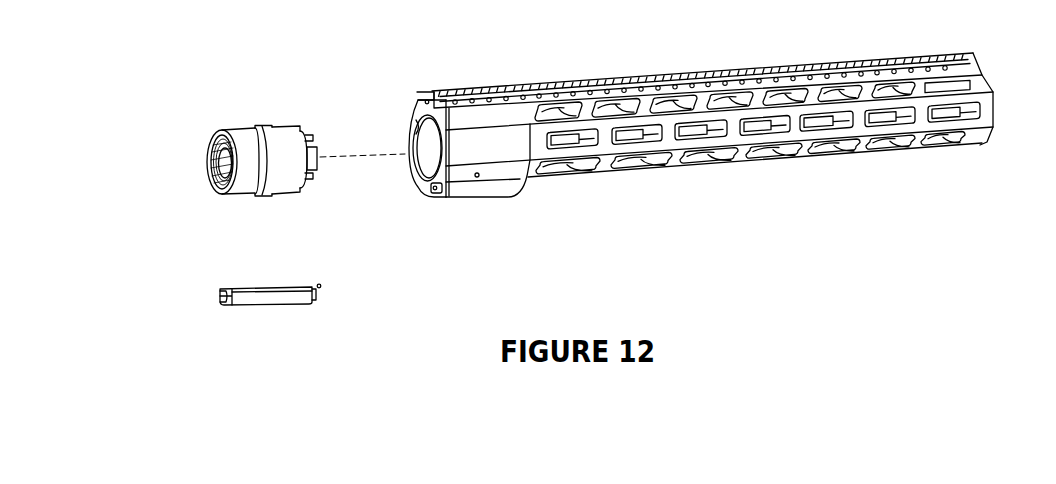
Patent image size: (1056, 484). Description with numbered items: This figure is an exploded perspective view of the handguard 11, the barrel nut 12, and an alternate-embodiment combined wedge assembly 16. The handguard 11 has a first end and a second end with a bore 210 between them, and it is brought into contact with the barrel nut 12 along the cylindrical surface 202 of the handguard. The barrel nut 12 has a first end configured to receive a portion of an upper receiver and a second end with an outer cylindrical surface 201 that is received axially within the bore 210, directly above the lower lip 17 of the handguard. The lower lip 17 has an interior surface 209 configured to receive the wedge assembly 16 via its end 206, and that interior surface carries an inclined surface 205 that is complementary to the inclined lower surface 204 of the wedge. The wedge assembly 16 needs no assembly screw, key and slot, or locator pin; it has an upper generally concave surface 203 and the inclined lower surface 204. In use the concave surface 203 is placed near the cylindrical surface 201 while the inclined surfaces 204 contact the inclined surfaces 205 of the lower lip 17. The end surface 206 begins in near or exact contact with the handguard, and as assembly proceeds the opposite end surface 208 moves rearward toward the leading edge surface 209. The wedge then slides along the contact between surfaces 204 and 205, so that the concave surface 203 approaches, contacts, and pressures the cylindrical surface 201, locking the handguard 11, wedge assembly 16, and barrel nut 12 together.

The handguard 11 is at (495, 88).
The barrel nut 12 is at (290, 124).
The wedge assembly 16 is at (310, 281).
The lower lip 17 is at (500, 186).
The outer cylindrical surface 201 is at (268, 125).
The cylindrical surface 202 is at (409, 133).
The concave surface 203 is at (270, 286).
The inclined lower surface 204 is at (212, 302).
The inclined surface 205 is at (432, 191).
The end surface 206 is at (318, 289).
The opposite end surface 208 is at (220, 294).
The interior surface 209 is at (431, 195).
The bore 210 is at (420, 150).